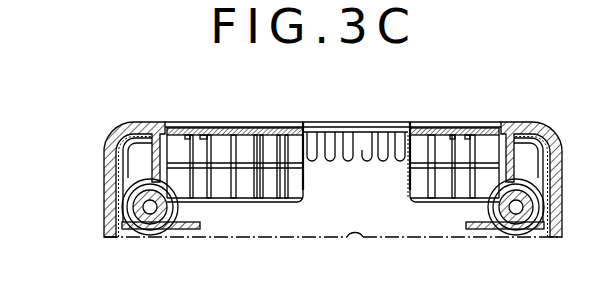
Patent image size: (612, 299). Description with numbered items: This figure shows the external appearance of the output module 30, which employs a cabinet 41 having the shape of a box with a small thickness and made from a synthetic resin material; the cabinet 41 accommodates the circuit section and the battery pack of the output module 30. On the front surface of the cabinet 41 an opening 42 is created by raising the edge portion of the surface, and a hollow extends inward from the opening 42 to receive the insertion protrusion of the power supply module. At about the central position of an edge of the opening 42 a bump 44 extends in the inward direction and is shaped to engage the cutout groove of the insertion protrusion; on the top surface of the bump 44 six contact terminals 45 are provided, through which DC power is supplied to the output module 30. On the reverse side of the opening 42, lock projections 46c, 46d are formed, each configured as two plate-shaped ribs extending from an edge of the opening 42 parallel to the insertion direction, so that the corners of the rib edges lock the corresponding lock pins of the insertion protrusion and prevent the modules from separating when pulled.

The output module 30 is at (27, 88).
The cabinet 41 is at (103, 190).
The opening 42 is at (248, 122).
The bump 44 is at (330, 131).
The contact terminals 45 is at (383, 143).
The lock projection 46c is at (200, 130).
The lock projection 46d is at (470, 130).